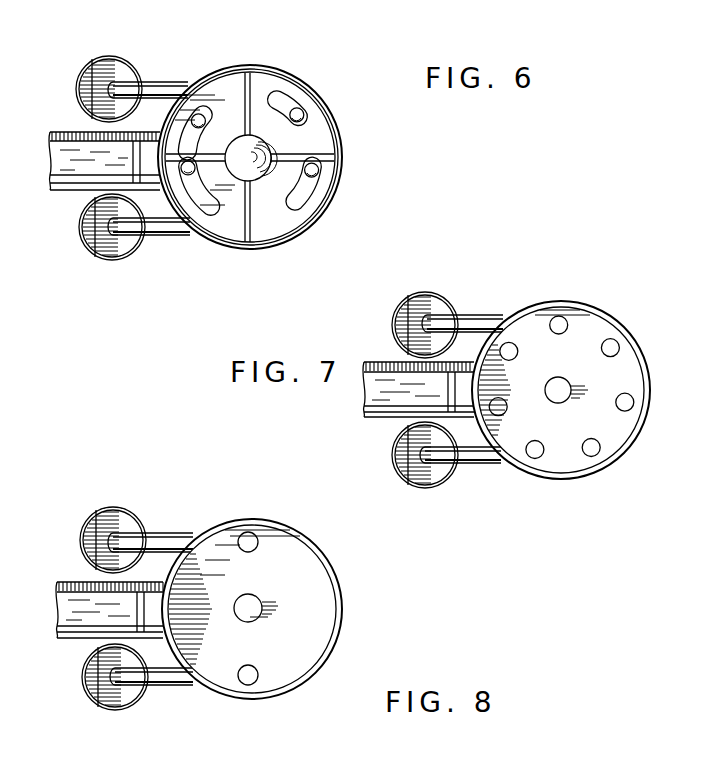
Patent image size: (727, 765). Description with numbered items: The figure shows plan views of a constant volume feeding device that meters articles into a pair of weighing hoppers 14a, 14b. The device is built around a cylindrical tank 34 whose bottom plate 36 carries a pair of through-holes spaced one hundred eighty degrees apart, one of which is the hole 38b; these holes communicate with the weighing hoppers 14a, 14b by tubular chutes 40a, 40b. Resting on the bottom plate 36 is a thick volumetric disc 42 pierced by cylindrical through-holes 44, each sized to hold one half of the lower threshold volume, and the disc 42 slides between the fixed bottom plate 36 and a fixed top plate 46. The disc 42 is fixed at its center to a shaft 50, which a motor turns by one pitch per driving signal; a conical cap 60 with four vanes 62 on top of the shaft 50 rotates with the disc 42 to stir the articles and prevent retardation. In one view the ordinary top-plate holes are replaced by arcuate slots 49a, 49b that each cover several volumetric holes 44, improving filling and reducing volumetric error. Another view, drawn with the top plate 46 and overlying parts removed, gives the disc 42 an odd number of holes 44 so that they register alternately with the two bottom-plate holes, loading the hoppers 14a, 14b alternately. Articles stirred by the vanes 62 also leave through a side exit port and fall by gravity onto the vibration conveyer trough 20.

In FIG. 6, the weighing hopper 14a is at (98, 255).
In FIG. 7, the weighing hopper 14a is at (447, 482).
In FIG. 6, the weighing hopper 14b is at (93, 60).
In FIG. 7, the weighing hopper 14b is at (447, 292).
In FIG. 8, the weighing hopper 14b is at (112, 508).
In FIG. 6, the vibration conveyer trough 20 is at (48, 130).
In FIG. 7, the vibration conveyer trough 20 is at (404, 409).
In FIG. 8, the vibration conveyer trough 20 is at (55, 586).
In FIG. 6, the cylindrical tank 34 is at (296, 72).
In FIG. 7, the cylindrical tank 34 is at (648, 430).
In FIG. 8, the cylindrical tank 34 is at (338, 575).
In FIG. 8, the bottom plate 36 is at (312, 648).
In FIG. 8, the through-hole 38b is at (248, 532).
In FIG. 6, the tubular chute 40a is at (156, 236).
In FIG. 7, the tubular chute 40a is at (487, 462).
In FIG. 6, the tubular chute 40b is at (161, 82).
In FIG. 7, the tubular chute 40b is at (490, 318).
In FIG. 8, the tubular chute 40b is at (160, 534).
In FIG. 7, the volumetric disc 42 is at (624, 382).
In FIG. 6, the cylindrical through-holes 44 is at (303, 110).
In FIG. 7, the cylindrical through-holes 44 is at (611, 347).
In FIG. 6, the top plate 46 is at (222, 112).
In FIG. 6, the arcuate slot 49a is at (315, 140).
In FIG. 6, the arcuate slot 49b is at (200, 217).
In FIG. 8, the shaft 50 is at (256, 600).
In FIG. 6, the conical cap 60 is at (249, 147).
In FIG. 6, the vanes 62 is at (258, 228).